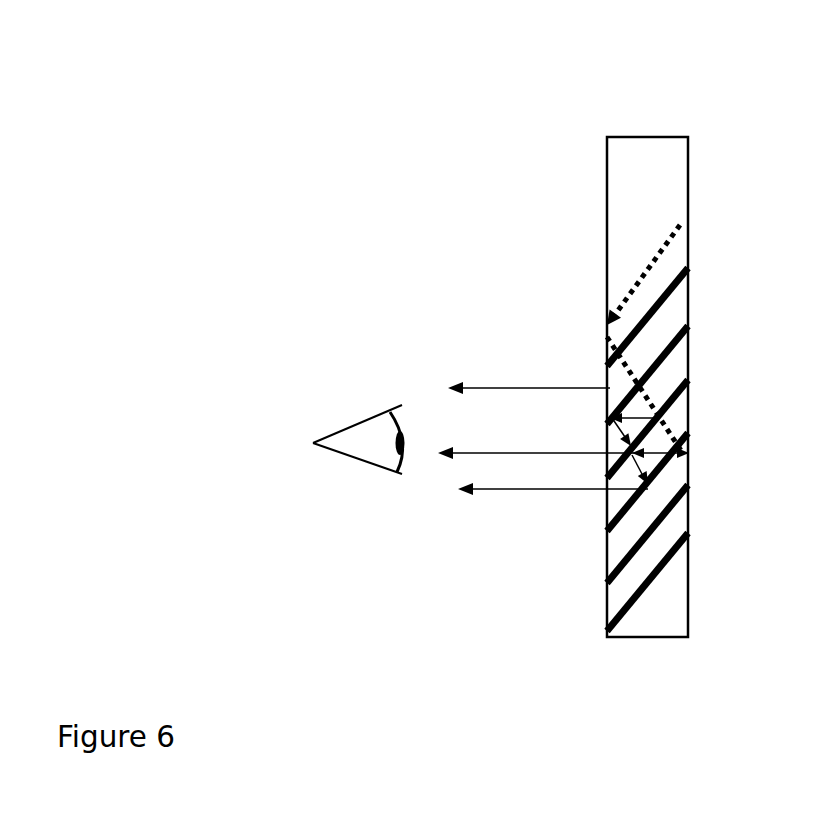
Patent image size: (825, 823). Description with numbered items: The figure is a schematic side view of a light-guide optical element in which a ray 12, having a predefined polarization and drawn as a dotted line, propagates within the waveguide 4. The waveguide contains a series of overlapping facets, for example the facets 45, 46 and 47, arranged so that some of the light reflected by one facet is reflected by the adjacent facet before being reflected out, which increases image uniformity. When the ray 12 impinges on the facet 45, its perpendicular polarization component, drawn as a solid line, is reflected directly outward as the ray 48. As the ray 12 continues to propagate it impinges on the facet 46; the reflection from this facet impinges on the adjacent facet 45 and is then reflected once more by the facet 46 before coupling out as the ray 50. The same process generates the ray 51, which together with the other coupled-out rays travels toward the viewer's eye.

The waveguide 4 is at (667, 137).
The ray 12 is at (648, 345).
The facet 45 is at (673, 347).
The facet 46 is at (673, 398).
The facet 47 is at (673, 447).
The ray 48 is at (529, 377).
The ray 50 is at (535, 441).
The ray 51 is at (553, 479).